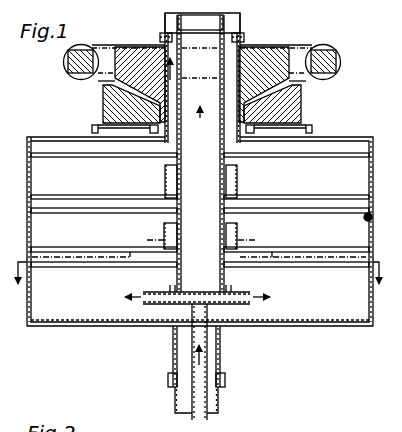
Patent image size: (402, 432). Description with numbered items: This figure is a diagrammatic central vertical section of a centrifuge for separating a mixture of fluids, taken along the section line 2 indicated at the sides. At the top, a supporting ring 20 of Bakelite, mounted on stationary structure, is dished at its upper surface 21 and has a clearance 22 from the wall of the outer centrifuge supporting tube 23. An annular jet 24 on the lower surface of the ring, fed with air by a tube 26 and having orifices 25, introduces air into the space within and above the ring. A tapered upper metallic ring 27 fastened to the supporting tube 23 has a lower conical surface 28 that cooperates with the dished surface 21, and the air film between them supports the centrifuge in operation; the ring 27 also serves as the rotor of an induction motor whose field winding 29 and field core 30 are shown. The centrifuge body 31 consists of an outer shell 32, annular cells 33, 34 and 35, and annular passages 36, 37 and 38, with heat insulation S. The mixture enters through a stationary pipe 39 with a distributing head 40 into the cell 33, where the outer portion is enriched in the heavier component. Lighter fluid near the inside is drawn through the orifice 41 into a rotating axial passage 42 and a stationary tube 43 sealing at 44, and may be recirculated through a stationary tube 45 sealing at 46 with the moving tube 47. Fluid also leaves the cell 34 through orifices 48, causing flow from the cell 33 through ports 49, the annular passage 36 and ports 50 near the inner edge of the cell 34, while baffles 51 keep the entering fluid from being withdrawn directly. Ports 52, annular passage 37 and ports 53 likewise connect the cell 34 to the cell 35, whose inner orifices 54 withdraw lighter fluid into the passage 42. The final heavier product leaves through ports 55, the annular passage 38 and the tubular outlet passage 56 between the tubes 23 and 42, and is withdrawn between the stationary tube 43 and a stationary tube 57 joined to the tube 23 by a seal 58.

The section line 2- 2 is at (197, 281).
The supporting ring 20 is at (288, 105).
The dished upper surface 21 is at (302, 98).
The clearance 22 is at (302, 122).
The outer centrifuge supporting tube 23 is at (233, 118).
The annular jet 24 is at (254, 130).
The orifices 25 is at (245, 130).
The tube 26 is at (92, 128).
The tapered upper metallic ring 27 is at (255, 60).
The lower conical surface 28 is at (265, 75).
The field winding 29 is at (98, 81).
The field core 30 is at (63, 64).
The centrifuge body 31 is at (27, 222).
The outer shell 32 is at (27, 178).
The annular centrifuge chamber or cell 33 is at (75, 293).
The annular centrifuge chamber or cell 34 is at (200, 238).
The annular centrifuge chamber or cell 35 is at (95, 174).
The annular centrifuge passage 36 is at (110, 267).
The annular centrifuge passage 37 is at (58, 203).
The annular centrifuge passage 38 is at (53, 143).
The stationary pipe 39 is at (207, 418).
The distributing head 40 is at (224, 292).
The orifice 41 is at (190, 292).
The rotating axial passage 42 is at (200, 153).
The stationary tube 43 is at (202, 23).
The seal 44 is at (187, 67).
The stationary tube 45 is at (219, 397).
The seal 46 is at (225, 380).
The moving tube 47 is at (221, 355).
The orifices 48 is at (219, 238).
The ports 49 is at (47, 268).
The ports 50 is at (160, 248).
The baffles 51 is at (165, 172).
The ports 52 is at (62, 214).
The ports 53 is at (165, 195).
The inner orifices 54 is at (221, 176).
The ports 55 is at (52, 142).
The tubular outlet passage 56 is at (228, 99).
The stationary tube 57 is at (160, 25).
The seal 58 is at (160, 38).